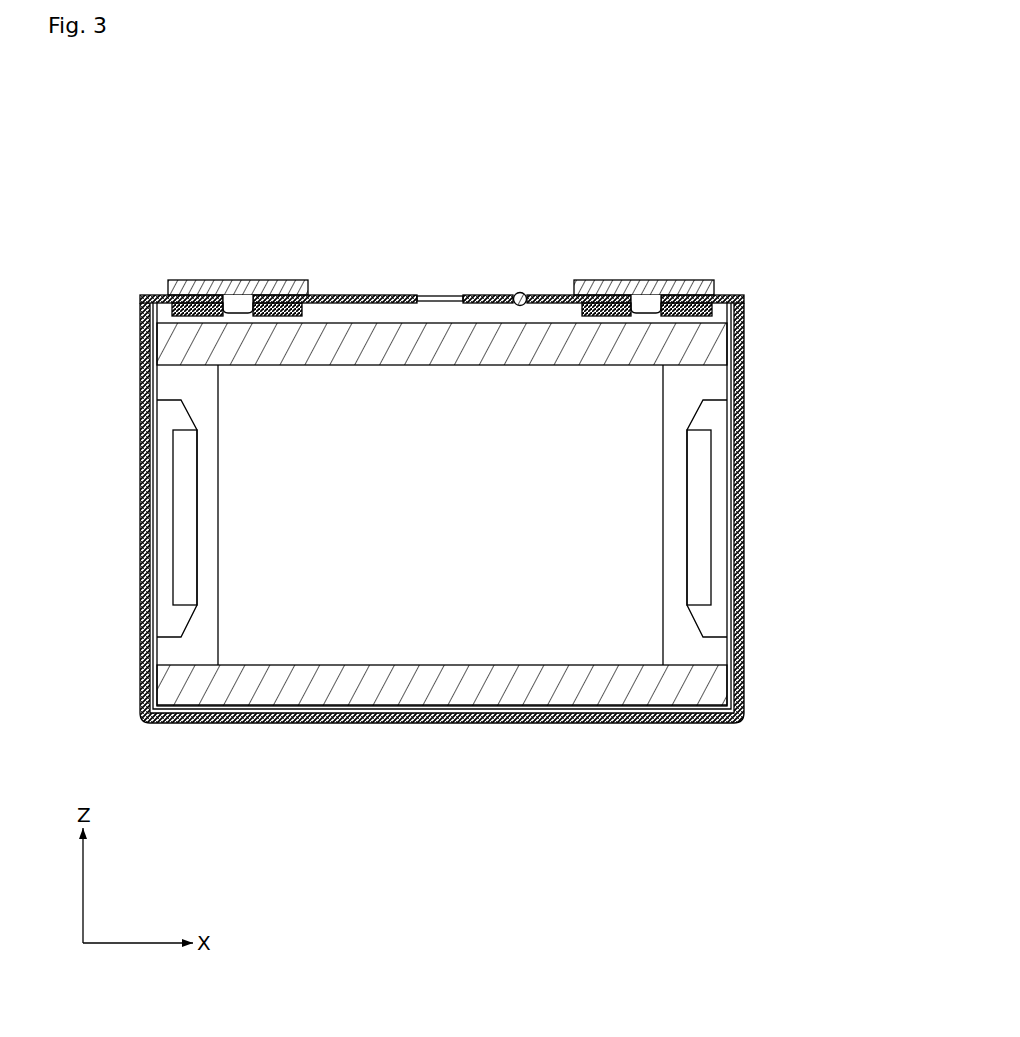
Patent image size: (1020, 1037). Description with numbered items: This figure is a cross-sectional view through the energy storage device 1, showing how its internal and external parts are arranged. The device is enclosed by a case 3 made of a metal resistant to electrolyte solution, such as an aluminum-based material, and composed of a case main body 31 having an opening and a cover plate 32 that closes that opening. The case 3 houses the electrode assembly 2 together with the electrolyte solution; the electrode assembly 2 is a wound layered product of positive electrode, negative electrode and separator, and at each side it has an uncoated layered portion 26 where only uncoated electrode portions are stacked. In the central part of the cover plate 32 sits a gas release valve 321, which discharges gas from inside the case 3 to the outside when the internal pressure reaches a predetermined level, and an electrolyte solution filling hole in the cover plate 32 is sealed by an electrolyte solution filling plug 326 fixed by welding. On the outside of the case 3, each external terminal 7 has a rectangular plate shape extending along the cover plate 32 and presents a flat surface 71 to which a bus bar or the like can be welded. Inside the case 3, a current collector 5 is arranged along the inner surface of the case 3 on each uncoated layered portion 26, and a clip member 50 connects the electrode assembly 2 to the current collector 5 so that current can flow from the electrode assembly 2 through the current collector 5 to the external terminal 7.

The energy storage device 1 is at (742, 153).
The electrode assembly 2 is at (490, 707).
The case 3 is at (842, 306).
The case main body 31 is at (746, 366).
The cover plate 32 is at (733, 293).
The gas release valve 321 is at (437, 292).
The electrolyte solution filling plug 326 is at (517, 293).
The current collector 5 is at (168, 562).
The clip member 50 is at (190, 479).
The external terminal 7 is at (222, 279).
The surface 71 is at (268, 280).
The uncoated layered portion 26 is at (203, 645).